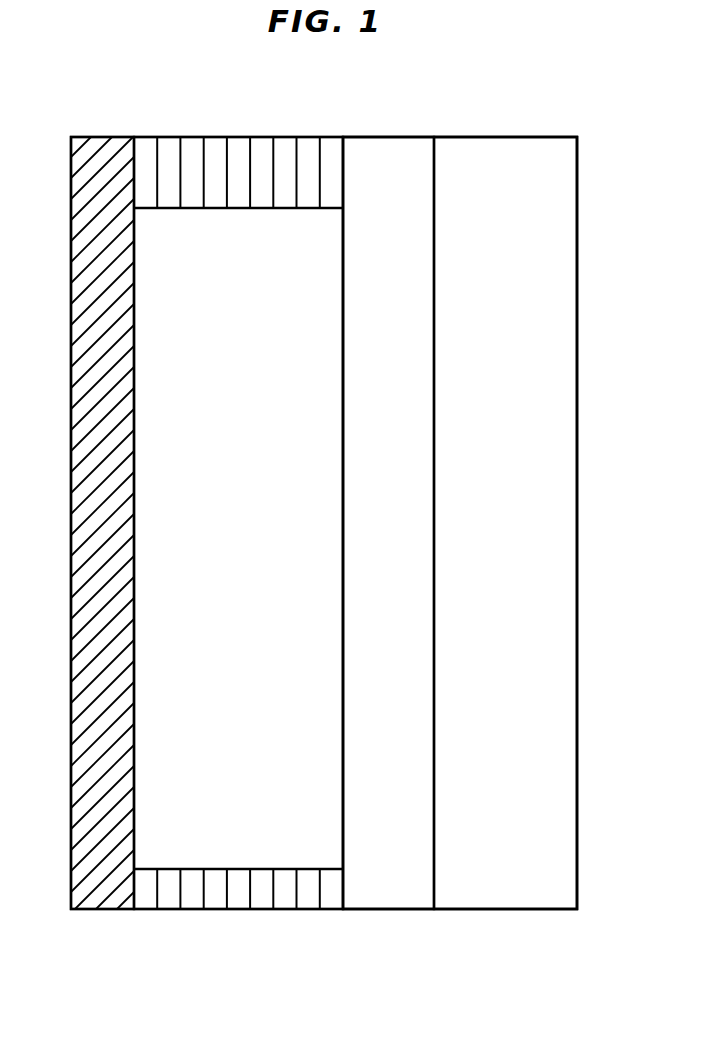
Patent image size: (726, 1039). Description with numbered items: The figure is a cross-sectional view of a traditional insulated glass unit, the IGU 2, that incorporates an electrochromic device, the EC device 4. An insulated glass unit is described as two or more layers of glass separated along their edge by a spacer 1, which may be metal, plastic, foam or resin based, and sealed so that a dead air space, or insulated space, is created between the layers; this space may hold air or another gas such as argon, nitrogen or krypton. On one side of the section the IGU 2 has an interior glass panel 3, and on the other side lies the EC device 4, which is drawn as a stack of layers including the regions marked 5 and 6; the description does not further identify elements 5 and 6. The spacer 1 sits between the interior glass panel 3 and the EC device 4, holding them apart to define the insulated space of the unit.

The spacer 1 is at (258, 137).
The IGU 2 is at (70, 985).
The interior glass panel 3 is at (71, 468).
The EC device 4 is at (342, 933).
The intermediate layer 5 is at (394, 137).
The outer layer 6 is at (578, 223).